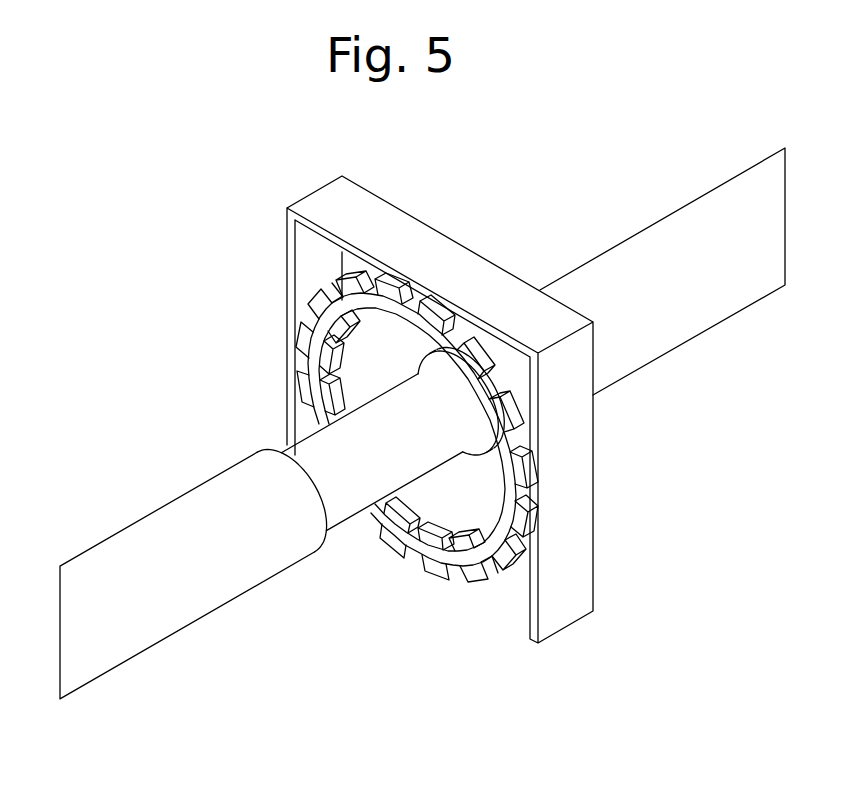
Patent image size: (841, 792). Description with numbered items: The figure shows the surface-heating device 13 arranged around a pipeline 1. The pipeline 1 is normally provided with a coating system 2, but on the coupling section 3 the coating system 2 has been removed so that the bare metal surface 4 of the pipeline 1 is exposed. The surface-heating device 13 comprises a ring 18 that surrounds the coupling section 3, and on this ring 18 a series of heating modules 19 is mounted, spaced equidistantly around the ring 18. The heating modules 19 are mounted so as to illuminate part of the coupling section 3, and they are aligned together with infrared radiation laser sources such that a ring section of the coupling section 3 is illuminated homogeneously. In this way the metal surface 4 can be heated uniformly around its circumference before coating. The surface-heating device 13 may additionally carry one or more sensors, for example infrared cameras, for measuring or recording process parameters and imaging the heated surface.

The pipeline 1 is at (131, 361).
The coating system 2 is at (157, 623).
The coupling section 3 is at (358, 577).
The metal surface 4 is at (292, 450).
The surface-heating device 13 is at (335, 200).
The ring 18 is at (382, 457).
The heating modules 19 is at (295, 357).